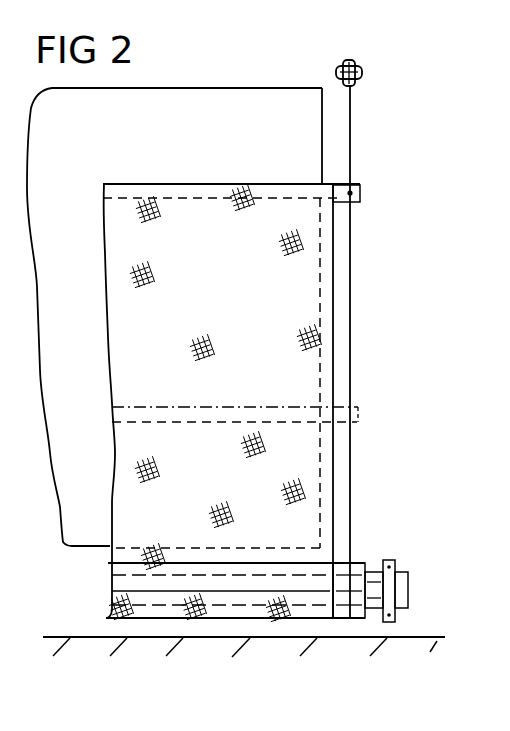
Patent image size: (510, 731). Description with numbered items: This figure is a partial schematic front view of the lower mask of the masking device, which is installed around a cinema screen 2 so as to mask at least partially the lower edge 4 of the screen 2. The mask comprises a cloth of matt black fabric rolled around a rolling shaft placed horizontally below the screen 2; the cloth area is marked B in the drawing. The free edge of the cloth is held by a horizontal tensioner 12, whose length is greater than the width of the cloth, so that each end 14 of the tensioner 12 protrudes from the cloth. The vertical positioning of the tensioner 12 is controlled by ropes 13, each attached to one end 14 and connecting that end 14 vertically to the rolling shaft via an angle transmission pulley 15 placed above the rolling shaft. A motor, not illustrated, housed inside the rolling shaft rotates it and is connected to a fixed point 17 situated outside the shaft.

The cinema screen 2 is at (160, 123).
The bag / sack B is at (203, 303).
The lower edge 4 is at (357, 570).
The horizontal tensioner 12 is at (360, 185).
The ropes 13 is at (352, 303).
The end of the tensioner 14 is at (362, 199).
The angle transmission pulley 15 is at (362, 80).
The fixed point 17 is at (400, 573).